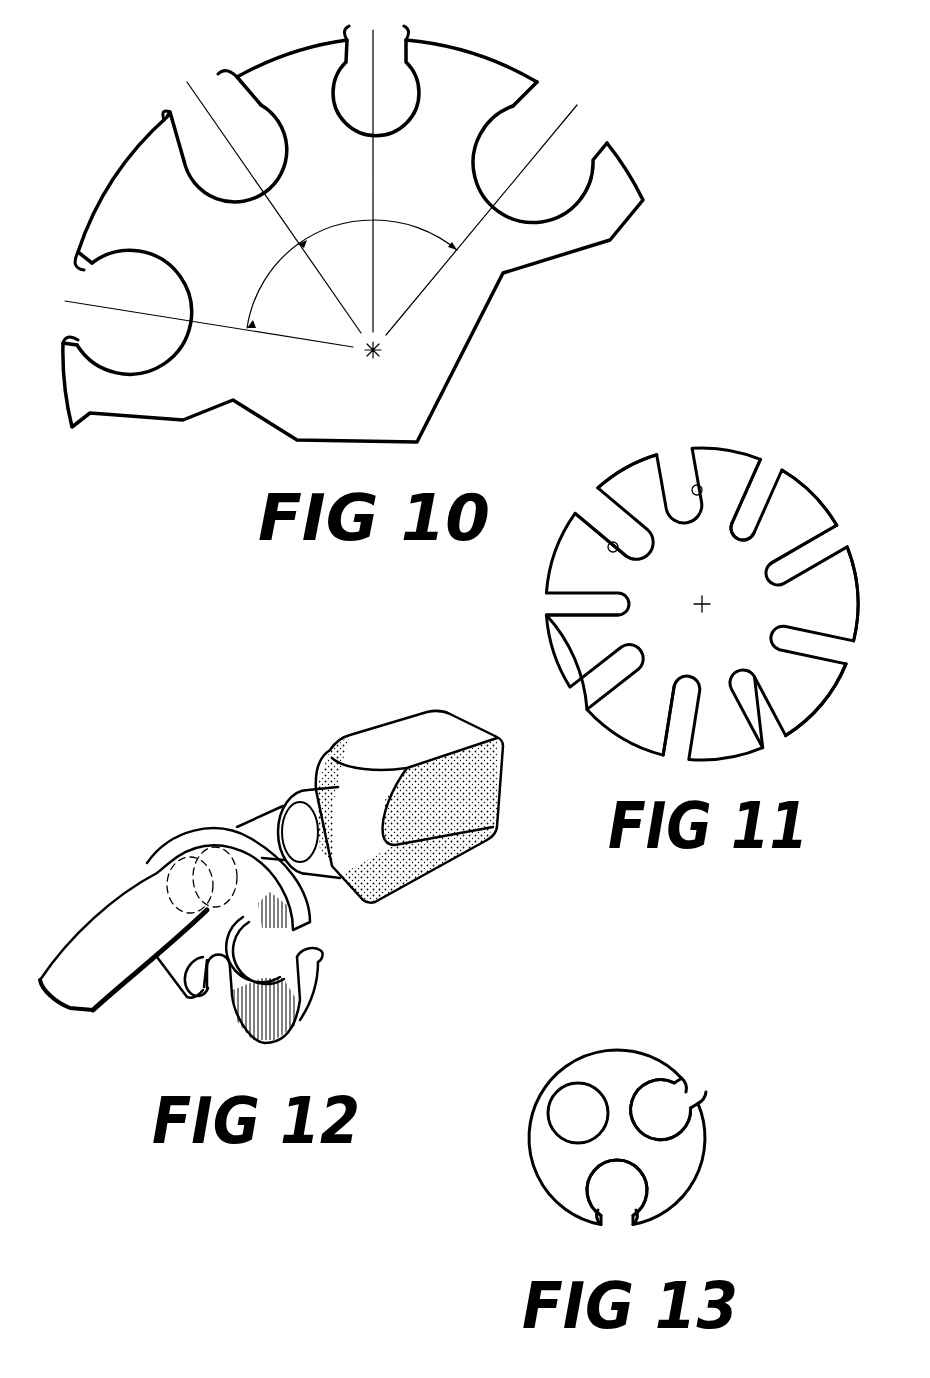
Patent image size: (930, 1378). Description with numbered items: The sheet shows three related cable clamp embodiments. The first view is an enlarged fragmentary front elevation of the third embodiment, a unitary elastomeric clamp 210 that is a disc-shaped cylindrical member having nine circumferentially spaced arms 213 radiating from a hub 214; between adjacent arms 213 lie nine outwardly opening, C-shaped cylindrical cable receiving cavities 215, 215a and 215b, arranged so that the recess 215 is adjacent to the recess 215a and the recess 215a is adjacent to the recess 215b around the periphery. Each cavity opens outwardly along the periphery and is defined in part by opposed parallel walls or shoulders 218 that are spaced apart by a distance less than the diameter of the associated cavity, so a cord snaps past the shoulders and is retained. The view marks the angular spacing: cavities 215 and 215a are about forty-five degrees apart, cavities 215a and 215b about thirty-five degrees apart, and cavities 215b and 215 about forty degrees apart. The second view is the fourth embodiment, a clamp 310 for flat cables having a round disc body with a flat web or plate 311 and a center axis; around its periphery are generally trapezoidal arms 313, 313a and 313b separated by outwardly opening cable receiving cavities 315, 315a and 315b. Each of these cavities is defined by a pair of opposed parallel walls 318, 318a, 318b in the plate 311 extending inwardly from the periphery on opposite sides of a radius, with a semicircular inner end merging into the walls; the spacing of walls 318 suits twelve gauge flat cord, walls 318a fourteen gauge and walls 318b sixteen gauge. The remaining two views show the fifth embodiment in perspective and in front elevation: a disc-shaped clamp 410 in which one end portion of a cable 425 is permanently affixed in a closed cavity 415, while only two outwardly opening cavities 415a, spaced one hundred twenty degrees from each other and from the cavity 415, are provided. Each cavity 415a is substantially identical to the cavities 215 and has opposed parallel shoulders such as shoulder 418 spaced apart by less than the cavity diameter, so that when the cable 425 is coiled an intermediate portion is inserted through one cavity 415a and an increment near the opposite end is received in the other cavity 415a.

In FIG. 10, the clamp 210 is at (483, 317).
In FIG. 10, the arms 213 is at (463, 93).
In FIG. 10, the hub 214 is at (320, 398).
In FIG. 10, the cable receiving cavity 215 is at (530, 133).
In FIG. 10, the cable receiving cavity 215a is at (213, 148).
In FIG. 10, the cable receiving cavity 215b is at (385, 58).
In FIG. 10, the walls or shoulders 218 is at (222, 80).
In FIG. 11, the clamp 310 is at (550, 656).
In FIG. 11, the plate 311 is at (714, 650).
In FIG. 11, the arm 313 is at (822, 517).
In FIG. 11, the arm 313a is at (840, 590).
In FIG. 11, the arm 313b is at (807, 700).
In FIG. 11, the cable receiving cavity 315 is at (673, 477).
In FIG. 11, the cable receiving cavity 315a is at (767, 485).
In FIG. 11, the cable receiving cavity 315b is at (603, 520).
In FIG. 11, the walls 318 is at (702, 488).
In FIG. 11, the walls 318a is at (763, 483).
In FIG. 11, the walls 318b is at (610, 551).
In FIG. 12, the clamp 410 is at (300, 1028).
In FIG. 13, the clamp 410 is at (527, 1175).
In FIG. 12, the closed cavity 415 is at (214, 853).
In FIG. 13, the closed cavity 415 is at (573, 1083).
In FIG. 12, the cable receiving cavity 415a is at (280, 947).
In FIG. 13, the cable receiving cavity 415a is at (657, 1110).
In FIG. 12, the shoulder 418 is at (320, 947).
In FIG. 13, the shoulder 418 is at (683, 1077).
In FIG. 12, the cable 425 is at (127, 902).